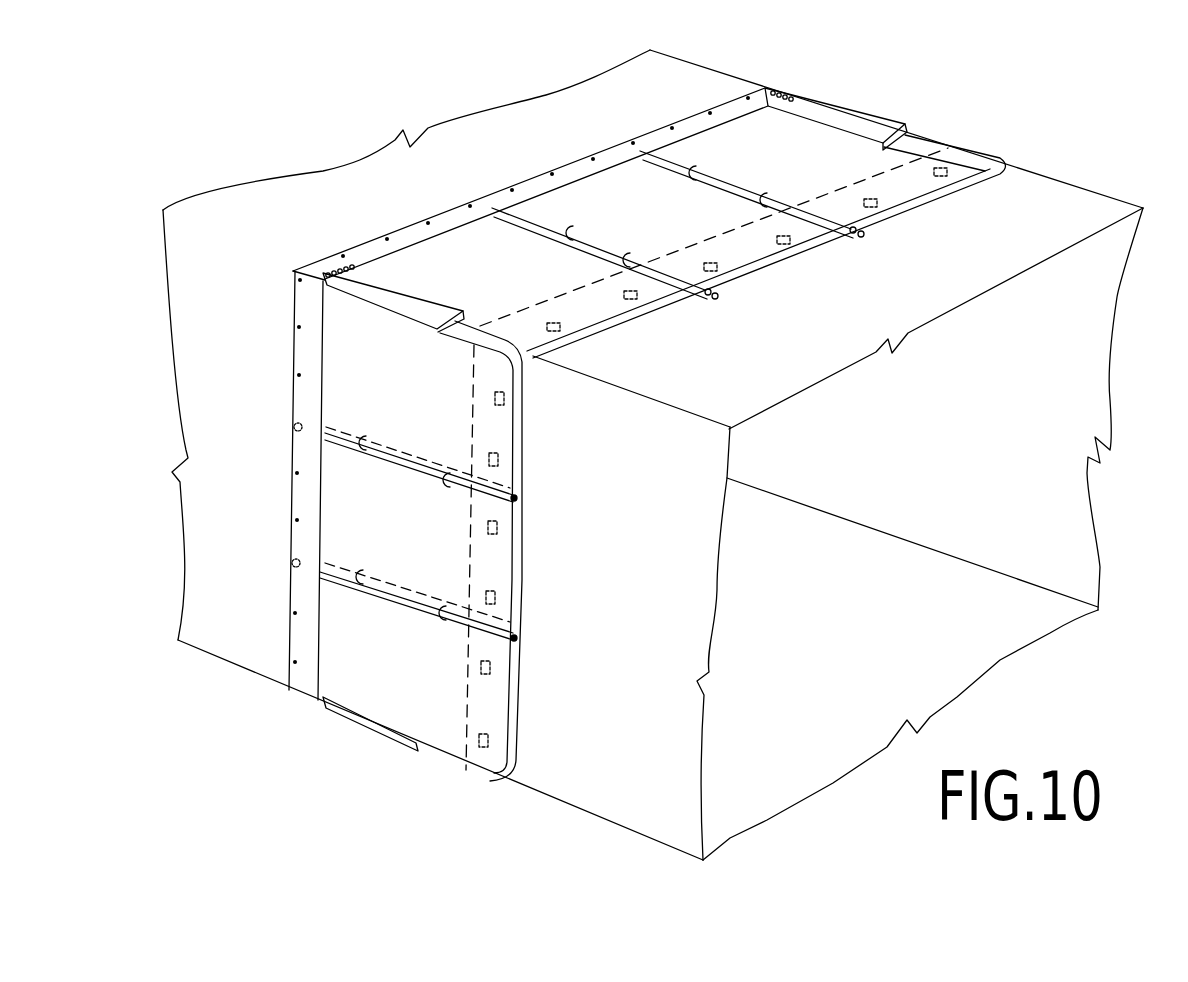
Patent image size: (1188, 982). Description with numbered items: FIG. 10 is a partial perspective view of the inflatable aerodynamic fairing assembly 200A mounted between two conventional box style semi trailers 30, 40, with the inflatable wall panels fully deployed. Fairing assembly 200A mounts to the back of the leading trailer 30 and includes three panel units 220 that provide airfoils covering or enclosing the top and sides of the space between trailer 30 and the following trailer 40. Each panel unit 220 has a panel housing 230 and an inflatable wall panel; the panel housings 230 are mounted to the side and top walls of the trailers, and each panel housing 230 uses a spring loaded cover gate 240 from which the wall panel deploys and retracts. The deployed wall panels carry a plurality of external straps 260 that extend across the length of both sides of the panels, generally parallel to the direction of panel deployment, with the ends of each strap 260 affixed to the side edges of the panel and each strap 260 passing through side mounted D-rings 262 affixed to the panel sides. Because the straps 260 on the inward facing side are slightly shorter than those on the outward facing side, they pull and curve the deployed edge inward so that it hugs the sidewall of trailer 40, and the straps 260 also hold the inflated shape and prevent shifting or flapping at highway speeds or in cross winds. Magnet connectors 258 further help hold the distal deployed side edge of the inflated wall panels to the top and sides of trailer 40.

The semi trailer 30 is at (333, 217).
The semi trailer 40 is at (1083, 208).
The fairing assembly 200A is at (618, 422).
The panel unit 220 is at (538, 170).
The panel housing 230 is at (653, 133).
The spring loaded cover gate 240 is at (403, 293).
The magnet connectors 258 is at (880, 200).
The external straps 260 is at (770, 212).
The D-rings 262 is at (694, 170).